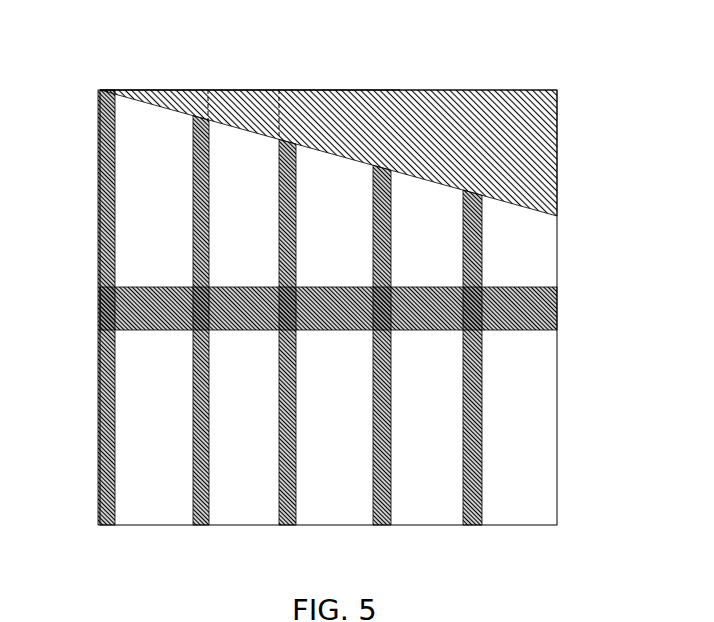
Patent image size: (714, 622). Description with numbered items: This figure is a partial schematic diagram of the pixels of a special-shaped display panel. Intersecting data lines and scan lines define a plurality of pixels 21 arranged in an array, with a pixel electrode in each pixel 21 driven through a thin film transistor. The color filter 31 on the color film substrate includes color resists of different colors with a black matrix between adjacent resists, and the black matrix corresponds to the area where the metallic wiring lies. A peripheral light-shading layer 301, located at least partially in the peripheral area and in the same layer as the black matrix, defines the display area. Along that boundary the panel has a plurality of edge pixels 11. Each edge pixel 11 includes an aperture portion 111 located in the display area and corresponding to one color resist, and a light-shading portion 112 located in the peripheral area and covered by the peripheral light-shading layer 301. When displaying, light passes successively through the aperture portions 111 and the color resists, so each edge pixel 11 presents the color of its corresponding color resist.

The edge pixel 11 is at (333, 42).
The aperture portion 111 is at (243, 222).
The light-shading portion 112 is at (237, 115).
The pixel 21 is at (163, 362).
The color filter 31 is at (467, 377).
The peripheral light-shading layer 301 is at (430, 125).